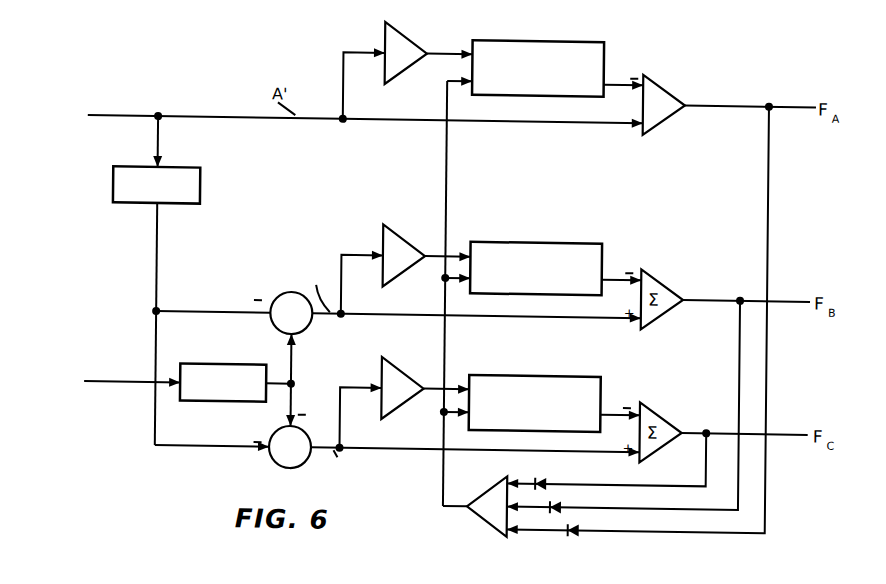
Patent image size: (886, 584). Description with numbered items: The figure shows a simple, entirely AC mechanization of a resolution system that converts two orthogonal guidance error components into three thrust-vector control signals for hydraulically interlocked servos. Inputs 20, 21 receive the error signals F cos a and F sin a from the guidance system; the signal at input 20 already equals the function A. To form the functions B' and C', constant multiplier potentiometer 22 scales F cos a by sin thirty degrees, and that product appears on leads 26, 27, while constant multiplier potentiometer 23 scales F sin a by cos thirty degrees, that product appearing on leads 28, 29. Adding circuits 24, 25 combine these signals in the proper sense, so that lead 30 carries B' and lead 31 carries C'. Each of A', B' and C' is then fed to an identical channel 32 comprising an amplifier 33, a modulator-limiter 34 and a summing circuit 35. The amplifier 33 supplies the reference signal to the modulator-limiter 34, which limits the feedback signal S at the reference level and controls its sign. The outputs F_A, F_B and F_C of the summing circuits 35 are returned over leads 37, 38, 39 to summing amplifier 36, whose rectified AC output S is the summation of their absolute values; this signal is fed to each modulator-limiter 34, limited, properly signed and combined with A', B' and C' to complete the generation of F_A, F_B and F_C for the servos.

The input 20 is at (144, 118).
The input 21 is at (136, 389).
The constant multiplier potentiometer 22 is at (199, 186).
The constant multiplier potentiometer 23 is at (222, 368).
The adding circuit 24 is at (275, 292).
The adding circuit 25 is at (272, 430).
The lead 26 is at (207, 314).
The lead 27 is at (191, 451).
The lead 28 is at (296, 359).
The lead 29 is at (296, 402).
The lead 30 is at (323, 318).
The lead 31 is at (316, 454).
The channel 32 is at (548, 149).
The amplifier 33 is at (383, 36).
The modulator-limiter 34 is at (573, 38).
The summing circuit 35 is at (667, 85).
The summing amplifier 36 is at (487, 520).
The lead 37 is at (770, 130).
The lead 38 is at (740, 333).
The lead 39 is at (708, 468).